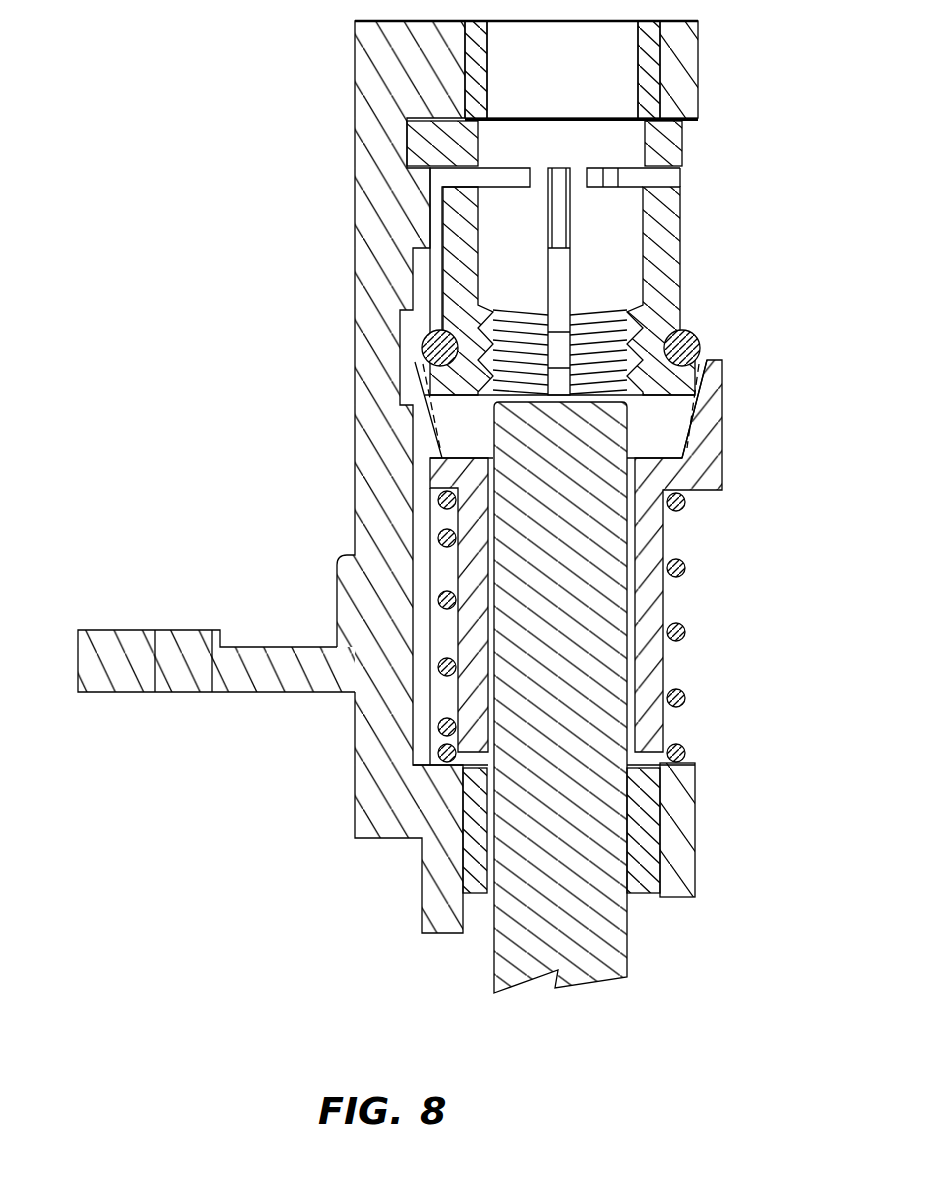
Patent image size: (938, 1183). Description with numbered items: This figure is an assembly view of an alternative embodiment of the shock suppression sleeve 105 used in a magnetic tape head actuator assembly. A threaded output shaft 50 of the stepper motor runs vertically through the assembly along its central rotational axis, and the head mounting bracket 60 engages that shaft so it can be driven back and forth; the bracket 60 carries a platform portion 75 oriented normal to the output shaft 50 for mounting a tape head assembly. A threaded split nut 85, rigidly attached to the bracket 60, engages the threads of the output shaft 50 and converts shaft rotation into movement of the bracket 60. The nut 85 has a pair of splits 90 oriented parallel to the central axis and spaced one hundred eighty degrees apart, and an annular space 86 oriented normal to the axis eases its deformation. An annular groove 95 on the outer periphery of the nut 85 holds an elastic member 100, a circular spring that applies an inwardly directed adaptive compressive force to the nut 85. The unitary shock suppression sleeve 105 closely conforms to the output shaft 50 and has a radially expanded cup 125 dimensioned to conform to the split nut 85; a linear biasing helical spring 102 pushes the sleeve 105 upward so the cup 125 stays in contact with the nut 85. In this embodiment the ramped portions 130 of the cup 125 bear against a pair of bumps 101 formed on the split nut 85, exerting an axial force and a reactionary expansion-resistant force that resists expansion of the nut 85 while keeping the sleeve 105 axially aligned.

The threaded output shaft 50 is at (628, 947).
The head mounting bracket 60 is at (355, 83).
The platform portion 75 is at (125, 628).
The threaded split nut 85 is at (680, 228).
The annular space 86 is at (650, 178).
The splits 90 is at (553, 273).
The annular groove 95 is at (663, 318).
The elastic member 100 is at (703, 337).
The bumps 101 is at (420, 364).
The linear biasing helical spring 102 is at (685, 630).
The shock suppression sleeve 105 is at (722, 470).
The cup 125 is at (467, 430).
The ramped portions 130 is at (678, 415).